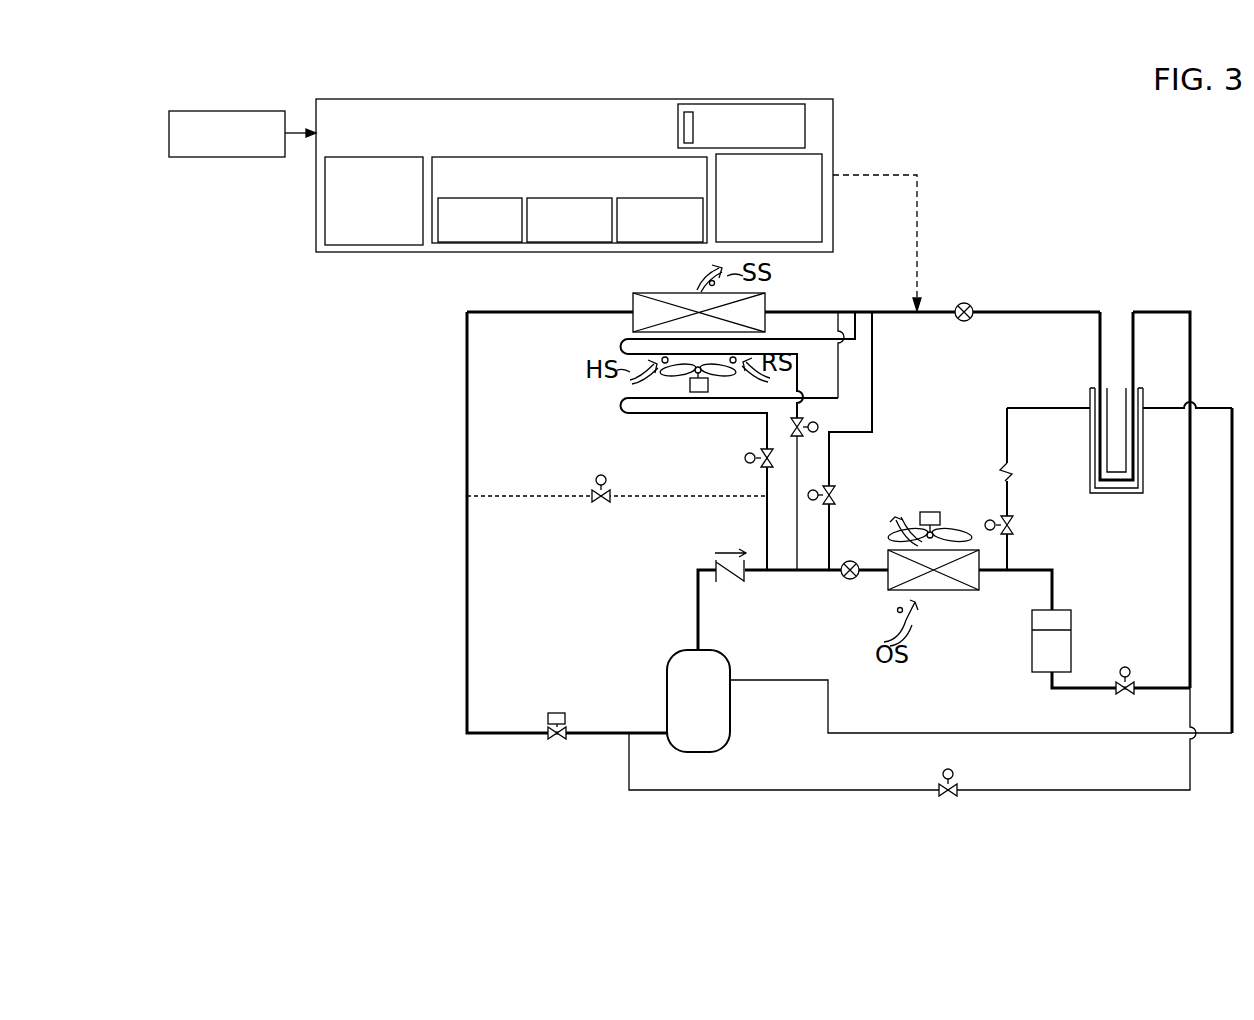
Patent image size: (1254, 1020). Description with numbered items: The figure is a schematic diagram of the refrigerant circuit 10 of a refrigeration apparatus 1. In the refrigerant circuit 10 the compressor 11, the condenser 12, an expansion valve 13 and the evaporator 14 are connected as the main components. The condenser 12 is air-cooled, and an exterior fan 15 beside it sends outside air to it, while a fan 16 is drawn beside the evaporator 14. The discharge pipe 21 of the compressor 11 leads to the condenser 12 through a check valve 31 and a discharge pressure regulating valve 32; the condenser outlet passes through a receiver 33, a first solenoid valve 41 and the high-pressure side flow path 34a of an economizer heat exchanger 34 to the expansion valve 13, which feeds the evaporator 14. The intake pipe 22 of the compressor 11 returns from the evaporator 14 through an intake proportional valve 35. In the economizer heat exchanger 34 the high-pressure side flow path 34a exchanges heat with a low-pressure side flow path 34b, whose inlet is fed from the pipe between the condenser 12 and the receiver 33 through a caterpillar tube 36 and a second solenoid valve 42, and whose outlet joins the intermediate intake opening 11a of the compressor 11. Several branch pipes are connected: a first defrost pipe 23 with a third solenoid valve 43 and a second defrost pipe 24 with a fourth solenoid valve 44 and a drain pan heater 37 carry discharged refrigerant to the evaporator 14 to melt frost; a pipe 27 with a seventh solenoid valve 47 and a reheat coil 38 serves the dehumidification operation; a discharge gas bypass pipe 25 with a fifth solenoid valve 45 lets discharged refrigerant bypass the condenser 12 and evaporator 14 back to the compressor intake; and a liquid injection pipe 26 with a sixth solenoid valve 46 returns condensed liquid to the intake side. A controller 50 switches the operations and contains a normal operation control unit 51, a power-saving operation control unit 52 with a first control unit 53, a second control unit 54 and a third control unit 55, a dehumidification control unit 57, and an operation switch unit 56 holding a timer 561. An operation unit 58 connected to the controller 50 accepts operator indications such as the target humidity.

The refrigeration apparatus 1 is at (1192, 290).
The refrigerant circuit 10 is at (1024, 298).
The compressor 11 is at (666, 690).
The intermediate intake opening 11a is at (736, 683).
The condenser 12 is at (936, 592).
The expansion valve 13 is at (964, 302).
The evaporator 14 is at (630, 322).
The exterior fan 15 is at (948, 528).
The indoor fan 16 is at (716, 374).
The discharge pipe 21 is at (698, 583).
The intake pipe 22 is at (594, 730).
The first defrost pipe 23 is at (830, 450).
The second defrost pipe 24 is at (765, 528).
The discharge gas bypass pipe 25 is at (645, 500).
The liquid injection pipe 26 is at (1192, 762).
The pipe 27 is at (798, 460).
The check valve 31 is at (744, 580).
The discharge pressure regulating valve 32 is at (850, 580).
The receiver 33 is at (1073, 621).
The economizer heat exchanger 34 is at (1084, 383).
The high-pressure side flow path 34a is at (1133, 445).
The low-pressure side flow path 34b is at (1118, 493).
The intake proportional valve 35 is at (548, 713).
The caterpillar tube 36 is at (1012, 468).
The drain pan heater 37 is at (622, 406).
The reheat coil 38 is at (622, 351).
The first solenoid valve 41 is at (1129, 668).
The second solenoid valve 42 is at (993, 519).
The third solenoid valve 43 is at (835, 499).
The fourth solenoid valve 44 is at (744, 462).
The fifth solenoid valve 45 is at (606, 476).
The sixth solenoid valve 46 is at (960, 773).
The seventh solenoid valve 47 is at (818, 422).
The controller 50 is at (846, 138).
The normal operation control unit 51 is at (351, 245).
The power-saving operation control unit 52 is at (437, 243).
The first control unit 53 is at (479, 243).
The second control unit 54 is at (562, 243).
The third control unit 55 is at (658, 243).
The operation switch unit 56 is at (777, 104).
The timer 561 is at (686, 108).
The dehumidification control unit 57 is at (773, 243).
The operation unit 58 is at (222, 158).